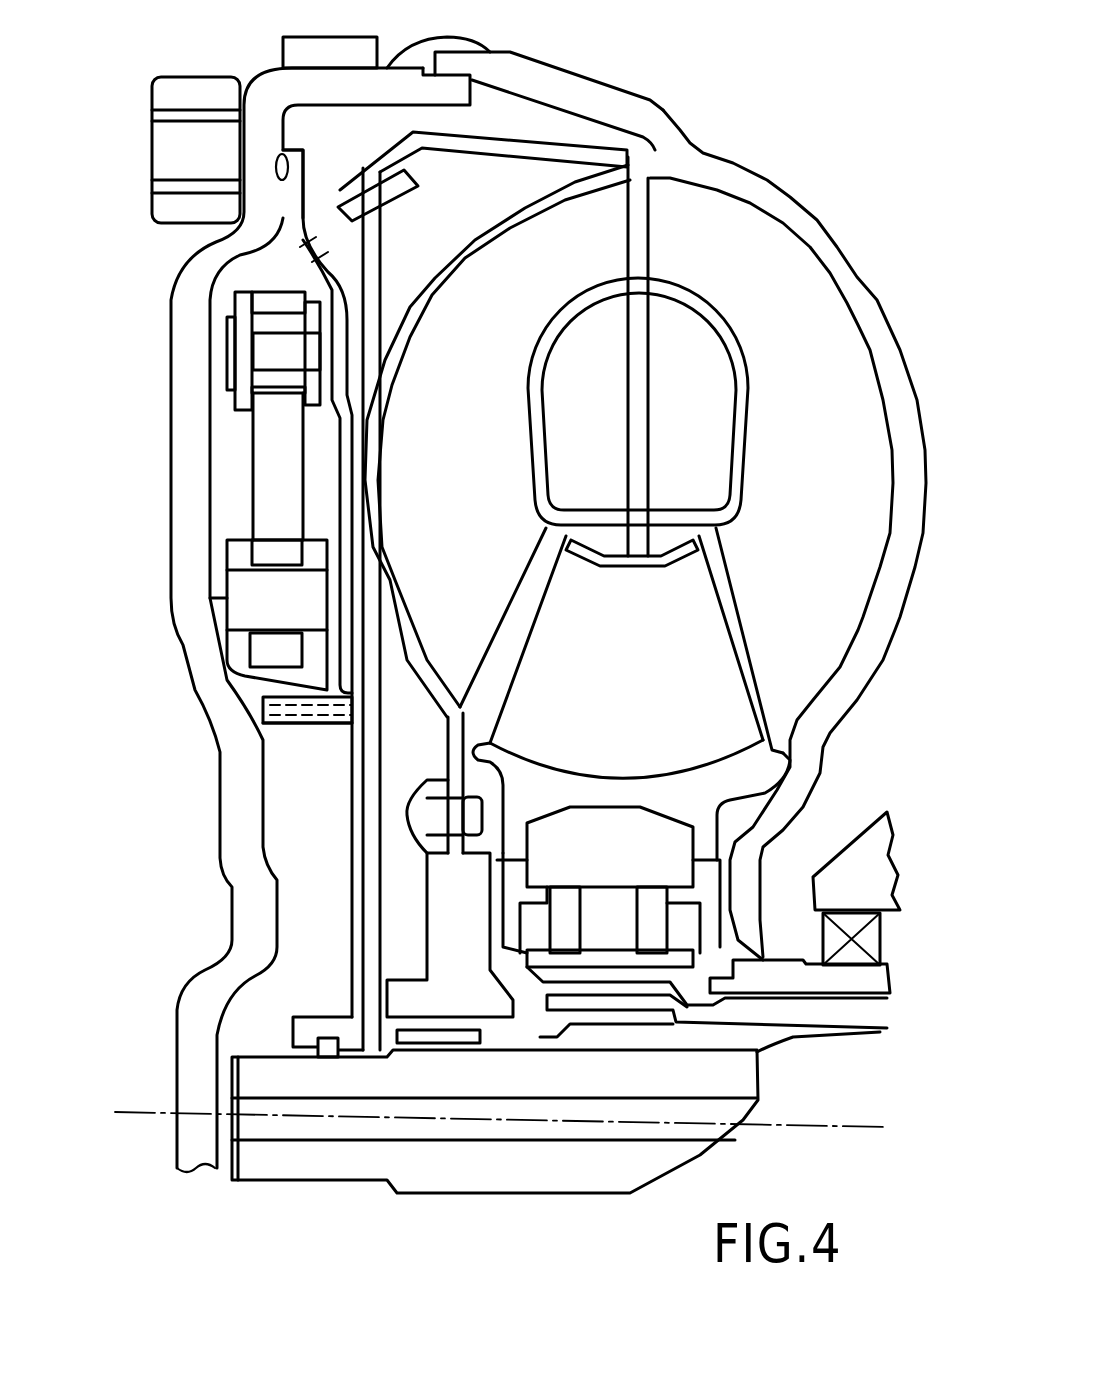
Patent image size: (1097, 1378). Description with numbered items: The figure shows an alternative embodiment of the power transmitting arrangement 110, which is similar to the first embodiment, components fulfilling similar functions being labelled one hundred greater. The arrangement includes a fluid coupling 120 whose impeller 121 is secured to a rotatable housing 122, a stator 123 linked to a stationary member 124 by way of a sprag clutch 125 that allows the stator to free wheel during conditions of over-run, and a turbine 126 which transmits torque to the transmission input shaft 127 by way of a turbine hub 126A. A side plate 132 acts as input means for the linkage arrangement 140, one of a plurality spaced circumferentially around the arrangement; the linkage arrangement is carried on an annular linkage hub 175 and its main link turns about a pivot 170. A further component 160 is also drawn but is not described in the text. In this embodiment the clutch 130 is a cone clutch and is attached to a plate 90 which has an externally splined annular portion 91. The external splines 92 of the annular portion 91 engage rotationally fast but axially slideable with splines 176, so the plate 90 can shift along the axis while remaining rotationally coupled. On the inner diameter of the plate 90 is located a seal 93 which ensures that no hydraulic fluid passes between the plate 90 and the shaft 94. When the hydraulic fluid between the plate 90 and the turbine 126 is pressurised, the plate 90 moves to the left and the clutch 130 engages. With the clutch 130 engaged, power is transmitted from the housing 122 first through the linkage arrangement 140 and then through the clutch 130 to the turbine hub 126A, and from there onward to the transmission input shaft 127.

The power transmitting arrangement 110 is at (645, 517).
The fluid coupling 120 is at (773, 200).
The housing 122 is at (192, 408).
The impeller 121 is at (836, 446).
The turbine 126 is at (488, 441).
The stator 123 is at (671, 689).
The sprag clutch 125 is at (631, 869).
The turbine hub 126A is at (460, 993).
The stationary member 124 is at (873, 1013).
The transmission input shaft 127 is at (790, 1033).
The clutch 130 is at (420, 167).
The side plate 132 is at (297, 187).
The nut 160 is at (212, 351).
The linkage arrangement 140 is at (234, 487).
The pivot 170 is at (223, 597).
The linkage hub 175 is at (233, 640).
The splines 176 is at (220, 670).
The external splines 92 is at (265, 700).
The externally splined annular portion 91 is at (291, 725).
The plate 90 is at (355, 850).
The seal 93 is at (323, 1038).
The shaft 94 is at (420, 1170).